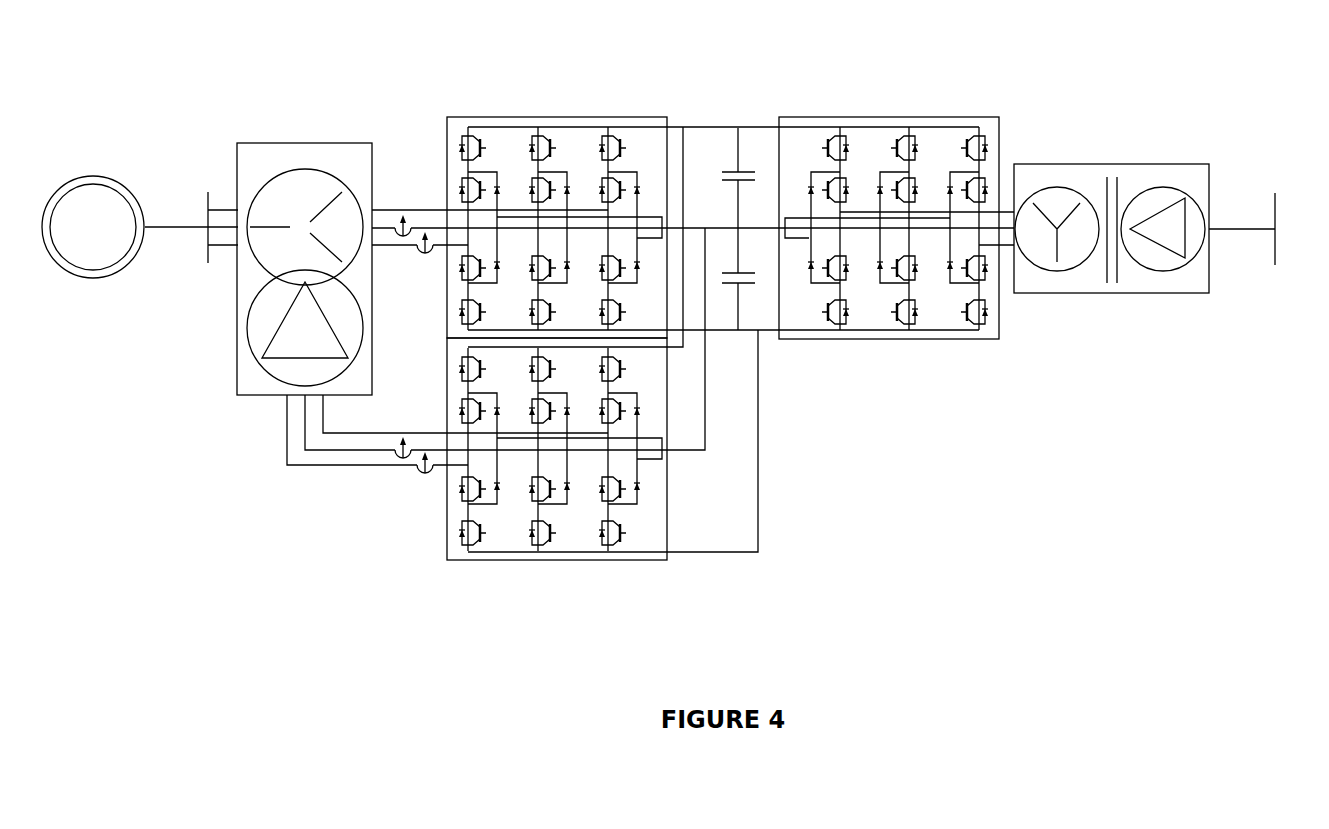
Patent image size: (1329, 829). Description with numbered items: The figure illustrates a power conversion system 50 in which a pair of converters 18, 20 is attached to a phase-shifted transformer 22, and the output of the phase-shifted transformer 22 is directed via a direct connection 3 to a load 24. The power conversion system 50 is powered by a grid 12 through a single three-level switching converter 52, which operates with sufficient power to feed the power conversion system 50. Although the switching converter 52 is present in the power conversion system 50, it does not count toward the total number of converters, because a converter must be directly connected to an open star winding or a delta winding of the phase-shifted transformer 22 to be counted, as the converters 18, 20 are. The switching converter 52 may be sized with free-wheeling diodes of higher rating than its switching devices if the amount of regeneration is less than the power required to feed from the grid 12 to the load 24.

The load 24 is at (93, 176).
The direct connection 3 is at (160, 245).
The phase-shifted transformer 22 is at (236, 367).
The converter 18 is at (487, 127).
The converter 20 is at (512, 552).
The power conversion system 50 is at (650, 321).
The single three-level switching converter 52 is at (988, 348).
The grid 12 is at (1279, 190).